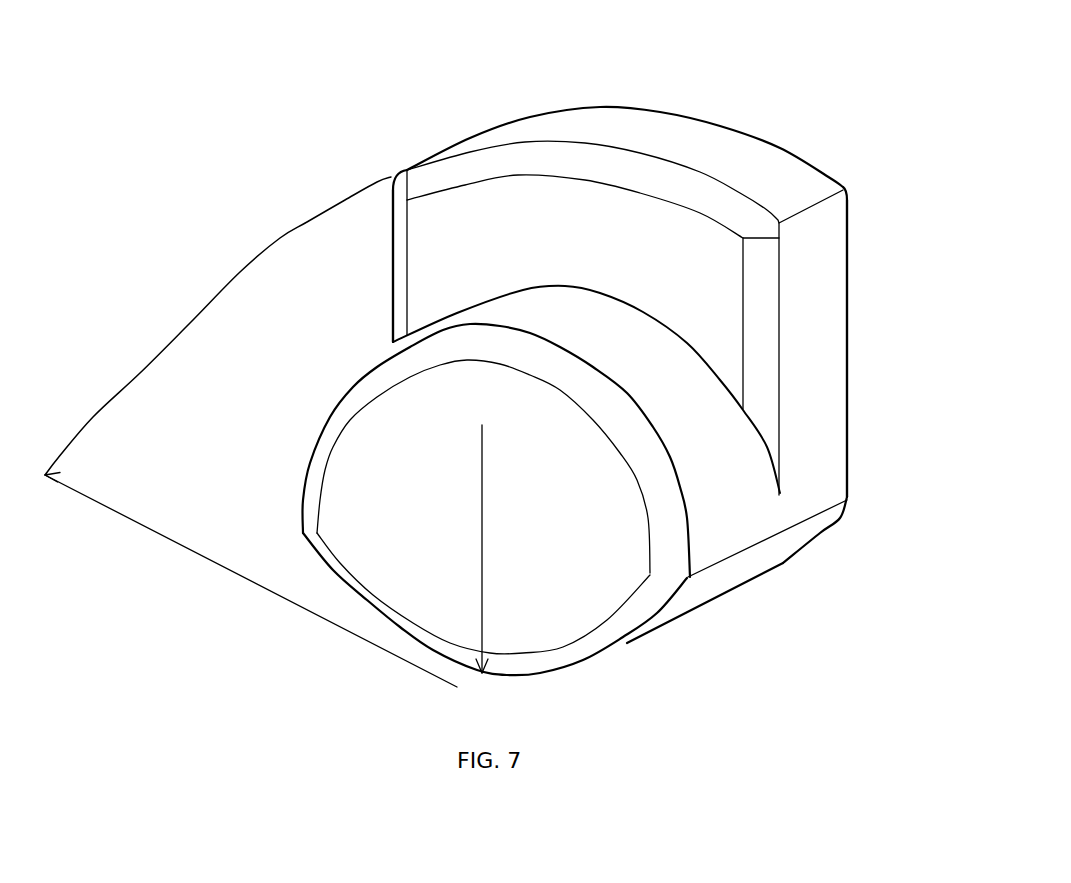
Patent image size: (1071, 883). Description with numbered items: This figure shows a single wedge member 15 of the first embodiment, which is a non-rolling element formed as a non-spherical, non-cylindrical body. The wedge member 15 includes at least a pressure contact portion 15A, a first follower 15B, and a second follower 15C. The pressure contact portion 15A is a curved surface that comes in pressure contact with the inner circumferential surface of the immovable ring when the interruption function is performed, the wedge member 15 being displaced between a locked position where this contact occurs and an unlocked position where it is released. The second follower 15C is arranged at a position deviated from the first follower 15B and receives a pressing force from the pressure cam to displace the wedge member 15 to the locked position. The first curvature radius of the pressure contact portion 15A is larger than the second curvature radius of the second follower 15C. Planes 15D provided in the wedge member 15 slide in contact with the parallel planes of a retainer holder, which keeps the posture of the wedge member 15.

The wedge member 15 is at (263, 150).
The pressure contact portion 15A is at (688, 137).
The first follower 15B is at (328, 412).
The second follower 15C is at (693, 617).
The planes 15D is at (392, 273).